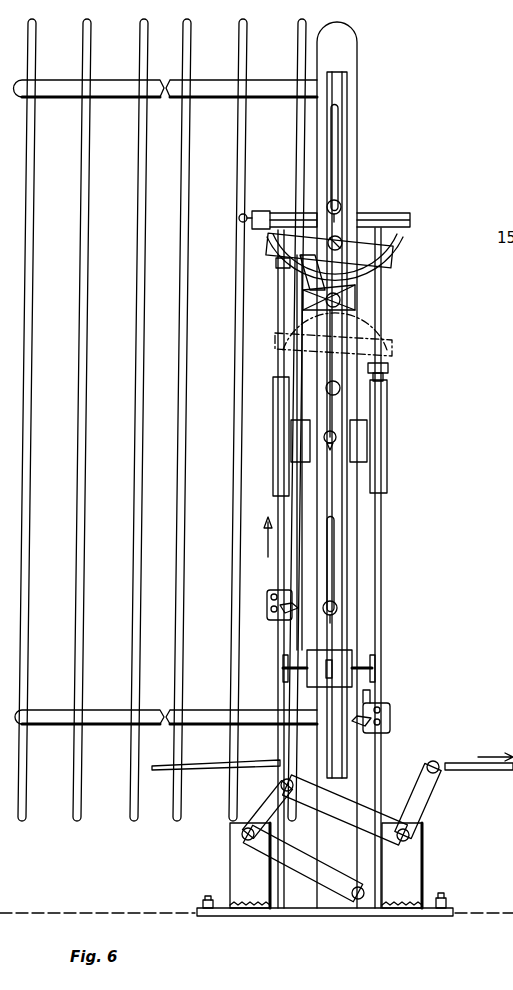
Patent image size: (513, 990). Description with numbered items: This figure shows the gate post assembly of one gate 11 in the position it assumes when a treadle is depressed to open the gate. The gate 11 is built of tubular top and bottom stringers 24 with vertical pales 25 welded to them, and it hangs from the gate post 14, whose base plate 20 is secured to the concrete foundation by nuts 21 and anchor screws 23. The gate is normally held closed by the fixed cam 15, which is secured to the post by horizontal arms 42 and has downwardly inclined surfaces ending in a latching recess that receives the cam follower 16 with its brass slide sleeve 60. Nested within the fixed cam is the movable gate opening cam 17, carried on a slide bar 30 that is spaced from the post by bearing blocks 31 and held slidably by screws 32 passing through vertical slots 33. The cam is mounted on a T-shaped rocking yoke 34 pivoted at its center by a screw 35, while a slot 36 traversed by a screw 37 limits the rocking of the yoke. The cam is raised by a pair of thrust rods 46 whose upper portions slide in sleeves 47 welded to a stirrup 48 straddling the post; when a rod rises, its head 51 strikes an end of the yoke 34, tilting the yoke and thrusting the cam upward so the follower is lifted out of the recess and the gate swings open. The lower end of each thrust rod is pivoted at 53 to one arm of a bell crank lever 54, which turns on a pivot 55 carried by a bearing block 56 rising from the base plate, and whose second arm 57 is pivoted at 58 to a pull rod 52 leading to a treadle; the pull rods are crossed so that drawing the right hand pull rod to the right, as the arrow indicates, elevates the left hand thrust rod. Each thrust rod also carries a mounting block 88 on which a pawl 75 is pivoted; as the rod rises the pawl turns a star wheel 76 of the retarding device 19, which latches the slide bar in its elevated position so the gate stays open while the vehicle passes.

The gate 11 is at (166, 418).
The gate post 14 is at (345, 55).
The fixed cam 15 is at (325, 307).
The cam follower 16 is at (330, 200).
The gate opening cam 17 is at (378, 199).
The retarding device 19 is at (324, 651).
The base plate 20 is at (256, 913).
The nut 21 is at (448, 905).
The anchor screw 23 is at (203, 900).
The stringer 24 is at (213, 86).
The pale 25 is at (138, 204).
The slide bar 30 is at (338, 89).
The bearing block 31 is at (338, 178).
The screw 32 is at (340, 205).
The vertical slot 33 is at (340, 130).
The T-shaped rocking yoke 34 is at (395, 252).
The screw 35 is at (365, 275).
The slot 36 is at (305, 297).
The screw 37 is at (358, 300).
The horizontal arm 42 is at (392, 220).
The thrust rod 46 is at (282, 360).
The sleeve 47 is at (280, 478).
The stirrup 48 is at (357, 435).
The head 51 is at (274, 265).
The pull rod 52 is at (208, 763).
The pivotal connection 53 is at (262, 800).
The bell crank lever 54 is at (368, 805).
The pivot 55 is at (242, 834).
The bearing block 56 is at (240, 868).
The second arm 57 is at (428, 796).
The pivotal connection 58 is at (284, 778).
The slide sleeve 60 is at (262, 211).
The push rod pawl 75 is at (380, 703).
The star wheel 76 is at (283, 668).
The mounting block 88 is at (270, 590).